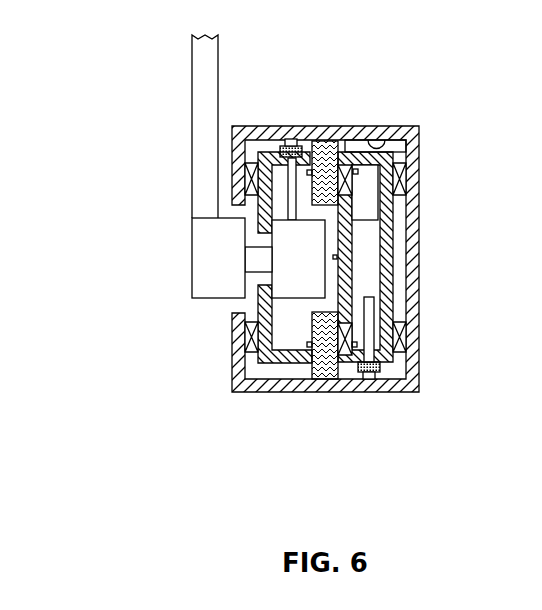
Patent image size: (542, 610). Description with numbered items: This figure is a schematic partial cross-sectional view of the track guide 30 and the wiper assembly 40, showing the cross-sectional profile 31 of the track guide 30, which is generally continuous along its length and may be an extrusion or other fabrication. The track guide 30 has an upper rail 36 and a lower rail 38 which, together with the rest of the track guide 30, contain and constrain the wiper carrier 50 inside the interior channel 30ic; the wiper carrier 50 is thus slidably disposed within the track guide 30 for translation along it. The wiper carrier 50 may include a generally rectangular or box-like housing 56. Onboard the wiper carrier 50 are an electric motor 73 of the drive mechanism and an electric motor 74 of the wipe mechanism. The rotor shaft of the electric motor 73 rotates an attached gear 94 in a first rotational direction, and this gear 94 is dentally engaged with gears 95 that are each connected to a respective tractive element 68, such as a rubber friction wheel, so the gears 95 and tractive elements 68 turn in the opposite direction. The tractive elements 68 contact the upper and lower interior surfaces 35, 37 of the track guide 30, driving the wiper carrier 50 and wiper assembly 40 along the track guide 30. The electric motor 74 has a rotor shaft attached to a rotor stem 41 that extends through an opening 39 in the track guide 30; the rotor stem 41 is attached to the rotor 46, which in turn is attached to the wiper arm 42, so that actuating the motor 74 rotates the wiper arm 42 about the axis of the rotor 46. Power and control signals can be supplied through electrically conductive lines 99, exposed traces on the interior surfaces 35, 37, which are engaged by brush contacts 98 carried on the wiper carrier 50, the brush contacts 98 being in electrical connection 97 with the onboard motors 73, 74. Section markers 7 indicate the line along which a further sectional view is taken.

The section line 7- 7 is at (82, 405).
The track guide 30 is at (363, 232).
The cross-sectional shape/profile 31 is at (408, 126).
The interior channel 30ic is at (400, 150).
The upper interior surface 35 is at (387, 126).
The upper rail 36 is at (232, 173).
The lower interior surface 37 is at (268, 378).
The lower rail 38 is at (232, 347).
The opening 39 is at (172, 278).
The wiper assembly 40 is at (409, 44).
The rotor stem 41 is at (245, 258).
The wiper arm 42 is at (203, 95).
The rotor 46 is at (218, 247).
The wiper carrier 50 is at (423, 256).
The housing 56 is at (395, 210).
The tractive element 68 is at (327, 141).
The electric motor 73 is at (368, 248).
The electric motor 74 is at (298, 259).
The gear 94 is at (352, 275).
The gears 95 is at (345, 152).
The electrical connection 97 is at (290, 200).
The brush contacts 98 is at (285, 142).
The electrically conductive lines 99 is at (283, 146).